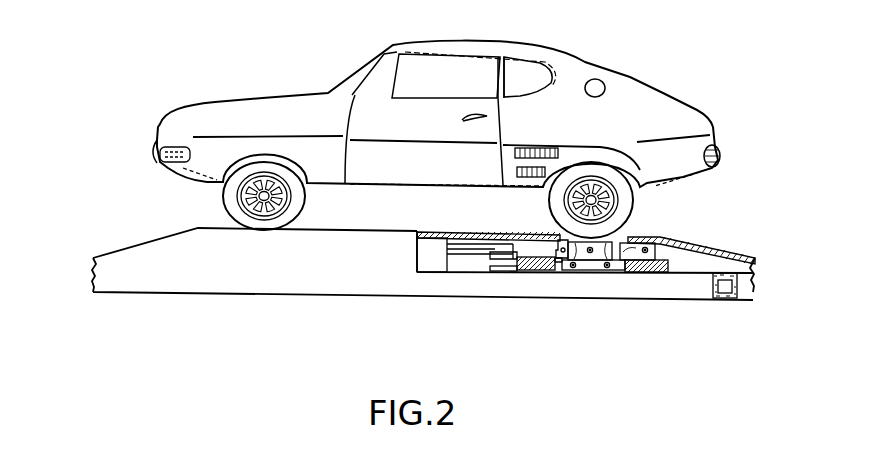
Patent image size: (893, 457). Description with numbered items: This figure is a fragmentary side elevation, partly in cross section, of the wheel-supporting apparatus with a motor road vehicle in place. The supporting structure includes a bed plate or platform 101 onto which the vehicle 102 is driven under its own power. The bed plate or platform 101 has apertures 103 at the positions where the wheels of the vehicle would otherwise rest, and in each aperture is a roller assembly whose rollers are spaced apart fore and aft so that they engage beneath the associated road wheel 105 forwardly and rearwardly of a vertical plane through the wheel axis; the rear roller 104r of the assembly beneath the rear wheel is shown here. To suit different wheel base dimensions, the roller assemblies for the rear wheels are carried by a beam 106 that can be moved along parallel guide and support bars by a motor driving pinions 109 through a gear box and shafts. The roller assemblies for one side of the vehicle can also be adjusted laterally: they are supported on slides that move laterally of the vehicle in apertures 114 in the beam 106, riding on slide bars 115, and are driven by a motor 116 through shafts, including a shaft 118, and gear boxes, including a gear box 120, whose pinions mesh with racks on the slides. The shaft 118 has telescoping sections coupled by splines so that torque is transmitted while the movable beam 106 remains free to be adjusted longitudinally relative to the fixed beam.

The bed plate or platform 101 is at (373, 229).
The vehicle 102 is at (668, 90).
The apertures 103 is at (549, 262).
The roller 104r is at (570, 241).
The road wheel 105 is at (225, 198).
The beam 106 is at (668, 272).
The pinions 109 is at (660, 241).
The apertures 114 is at (557, 262).
The slide bars 115 is at (573, 268).
The motor 116 is at (433, 258).
The shaft 118 is at (488, 270).
The gear box 120 is at (530, 265).